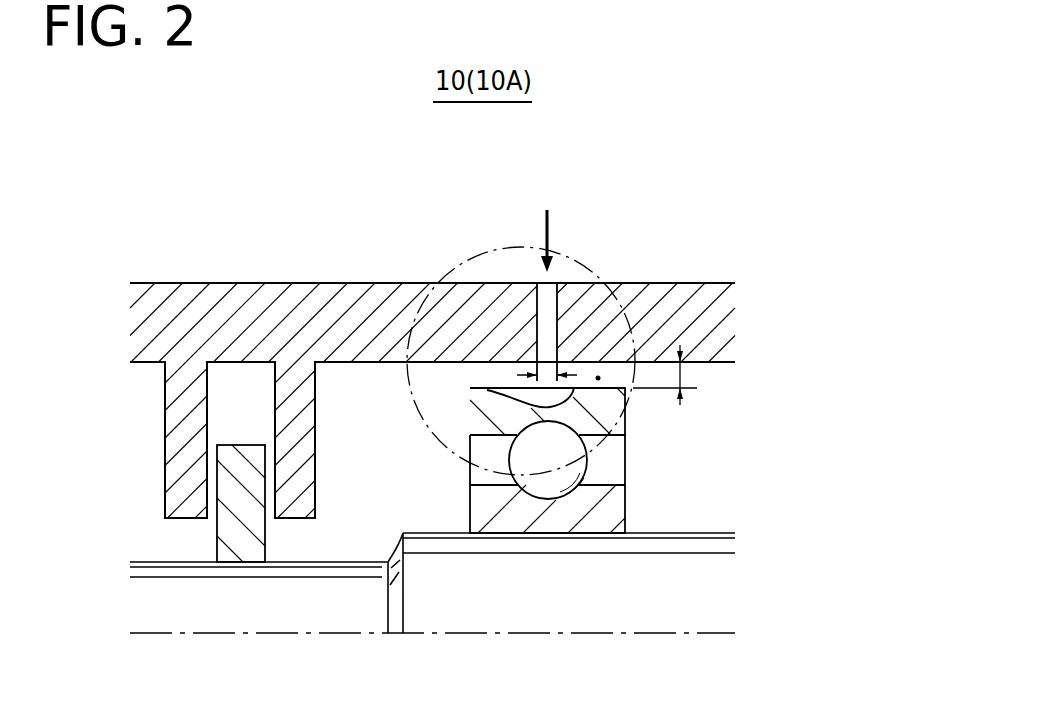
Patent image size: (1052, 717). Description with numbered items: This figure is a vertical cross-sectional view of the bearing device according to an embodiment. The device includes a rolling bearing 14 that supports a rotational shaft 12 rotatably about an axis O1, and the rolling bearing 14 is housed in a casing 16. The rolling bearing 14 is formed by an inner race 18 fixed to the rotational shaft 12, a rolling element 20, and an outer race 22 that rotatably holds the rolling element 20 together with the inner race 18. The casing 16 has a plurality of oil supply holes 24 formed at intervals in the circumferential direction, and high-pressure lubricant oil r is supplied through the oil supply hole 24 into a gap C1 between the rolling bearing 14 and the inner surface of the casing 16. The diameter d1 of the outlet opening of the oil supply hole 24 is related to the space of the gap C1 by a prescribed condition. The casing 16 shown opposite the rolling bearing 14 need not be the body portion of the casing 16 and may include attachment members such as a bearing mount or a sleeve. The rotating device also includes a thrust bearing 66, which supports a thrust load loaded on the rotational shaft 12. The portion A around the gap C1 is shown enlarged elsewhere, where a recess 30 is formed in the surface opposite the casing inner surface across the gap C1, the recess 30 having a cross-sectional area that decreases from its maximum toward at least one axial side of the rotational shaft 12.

The rotational shaft 12 is at (727, 597).
The rolling bearing 14 is at (679, 468).
The casing 16 is at (678, 295).
The inner race 18 is at (610, 508).
The rolling element 20 is at (572, 452).
The outer race 22 is at (605, 414).
The oil supply hole 24 is at (548, 303).
The recess 30 is at (523, 393).
The thrust bearing 66 is at (331, 424).
The A portion A is at (458, 262).
The high-pressure lubricant oil r is at (547, 221).
The diameter of outlet opening of oil supply hole d1 is at (541, 372).
The gap C1 is at (598, 378).
The axis O1 is at (567, 633).